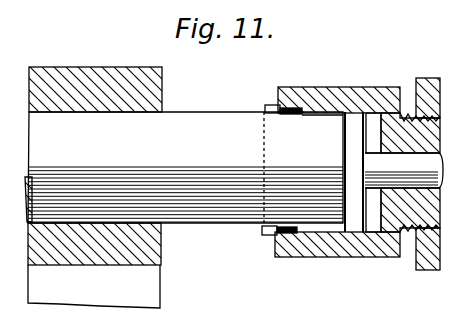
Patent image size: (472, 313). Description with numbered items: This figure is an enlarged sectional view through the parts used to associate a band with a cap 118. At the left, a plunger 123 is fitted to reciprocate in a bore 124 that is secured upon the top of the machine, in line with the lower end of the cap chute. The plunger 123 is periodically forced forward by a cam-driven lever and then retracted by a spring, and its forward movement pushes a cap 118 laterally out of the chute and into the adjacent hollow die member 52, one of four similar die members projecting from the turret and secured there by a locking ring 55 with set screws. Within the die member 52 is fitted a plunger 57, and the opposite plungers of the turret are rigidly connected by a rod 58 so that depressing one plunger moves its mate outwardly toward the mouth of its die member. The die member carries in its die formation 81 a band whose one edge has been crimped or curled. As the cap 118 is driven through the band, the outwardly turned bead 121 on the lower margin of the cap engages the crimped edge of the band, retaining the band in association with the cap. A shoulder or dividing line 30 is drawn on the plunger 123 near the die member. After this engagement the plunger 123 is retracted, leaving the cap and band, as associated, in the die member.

The bore 124 is at (95, 80).
The plunger 123 is at (236, 156).
The shaft shoulder line 30 is at (268, 105).
The die formation 81 is at (288, 108).
The bead 121 is at (262, 230).
The die member 52 is at (360, 97).
The plunger 57 is at (355, 215).
The locking ring 55 is at (428, 88).
The rod 58 is at (427, 182).
The cap 118 is at (312, 257).